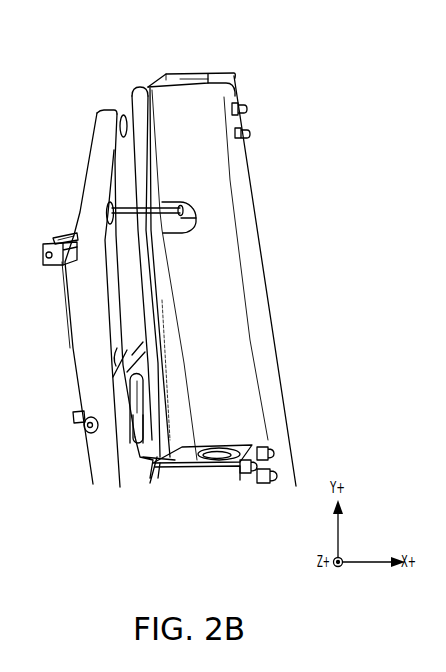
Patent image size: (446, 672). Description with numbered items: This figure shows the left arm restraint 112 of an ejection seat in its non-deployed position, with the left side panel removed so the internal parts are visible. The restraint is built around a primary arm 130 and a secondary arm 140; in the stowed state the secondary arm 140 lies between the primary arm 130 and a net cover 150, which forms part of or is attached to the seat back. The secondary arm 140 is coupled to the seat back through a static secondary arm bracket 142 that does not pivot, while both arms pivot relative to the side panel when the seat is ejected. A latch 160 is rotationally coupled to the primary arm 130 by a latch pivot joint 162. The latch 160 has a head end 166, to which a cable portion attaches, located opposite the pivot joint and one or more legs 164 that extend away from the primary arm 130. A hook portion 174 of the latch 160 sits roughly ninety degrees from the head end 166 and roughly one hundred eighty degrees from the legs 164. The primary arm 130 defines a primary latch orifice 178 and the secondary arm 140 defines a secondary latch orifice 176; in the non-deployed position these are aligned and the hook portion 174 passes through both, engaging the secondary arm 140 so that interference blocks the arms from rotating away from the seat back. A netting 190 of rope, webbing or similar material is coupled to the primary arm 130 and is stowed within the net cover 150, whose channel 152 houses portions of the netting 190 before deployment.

The left arm restraint 112 is at (62, 118).
The primary arm 130 is at (88, 377).
The secondary arm 140 is at (132, 97).
The secondary arm bracket 142 is at (256, 445).
The net cover 150 is at (256, 292).
The channel 152 is at (214, 70).
The latch 160 is at (46, 265).
The latch pivot joint 162 is at (86, 428).
The leg 164 is at (76, 416).
The head end 166 is at (56, 242).
The hook portion 174 is at (136, 433).
The secondary latch orifice 176 is at (150, 383).
The primary latch orifice 178 is at (102, 351).
The netting 190 is at (165, 204).